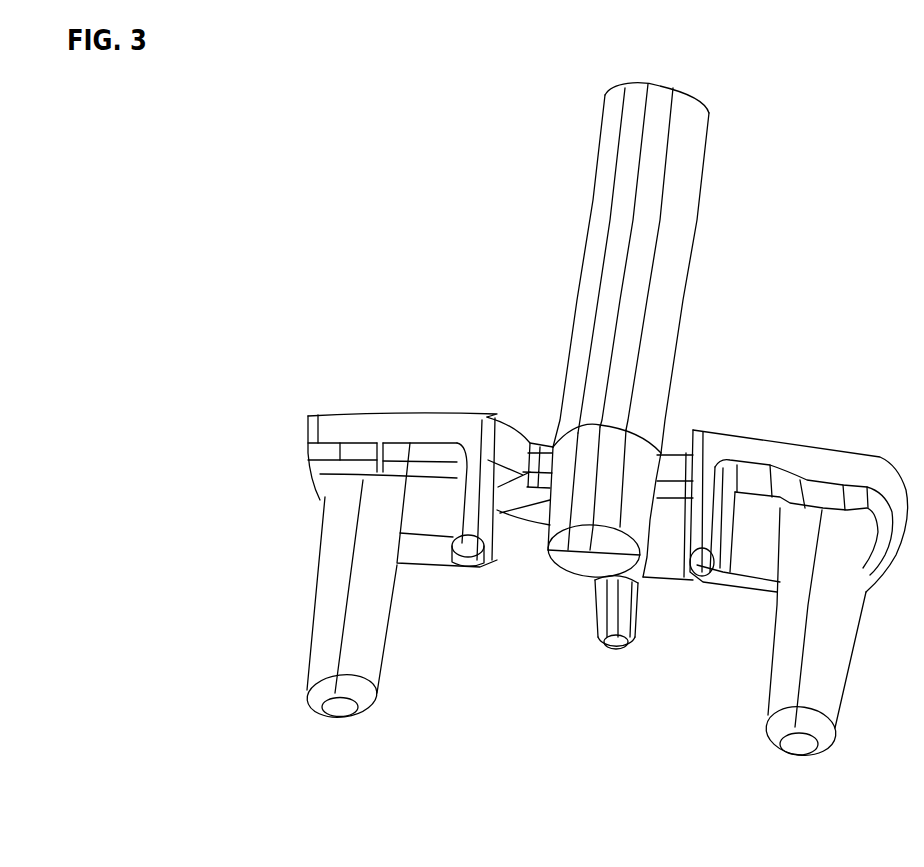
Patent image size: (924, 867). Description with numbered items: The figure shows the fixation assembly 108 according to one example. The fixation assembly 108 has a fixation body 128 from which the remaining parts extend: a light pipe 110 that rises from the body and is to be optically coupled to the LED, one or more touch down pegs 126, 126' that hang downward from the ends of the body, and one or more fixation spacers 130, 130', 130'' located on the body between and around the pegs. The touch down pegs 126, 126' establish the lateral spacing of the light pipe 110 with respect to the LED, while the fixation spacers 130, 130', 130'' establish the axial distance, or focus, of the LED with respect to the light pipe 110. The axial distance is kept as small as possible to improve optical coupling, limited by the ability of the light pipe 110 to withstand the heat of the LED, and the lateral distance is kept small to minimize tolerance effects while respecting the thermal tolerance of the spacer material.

The fixation assembly 108 is at (280, 179).
The light pipe 110 is at (689, 281).
The touch down peg 126 is at (331, 633).
The touch down peg 126' is at (796, 666).
The fixation body 128 is at (353, 413).
The fixation spacer 130 is at (464, 536).
The fixation spacer 130' is at (730, 569).
The fixation spacer 130'' is at (635, 650).